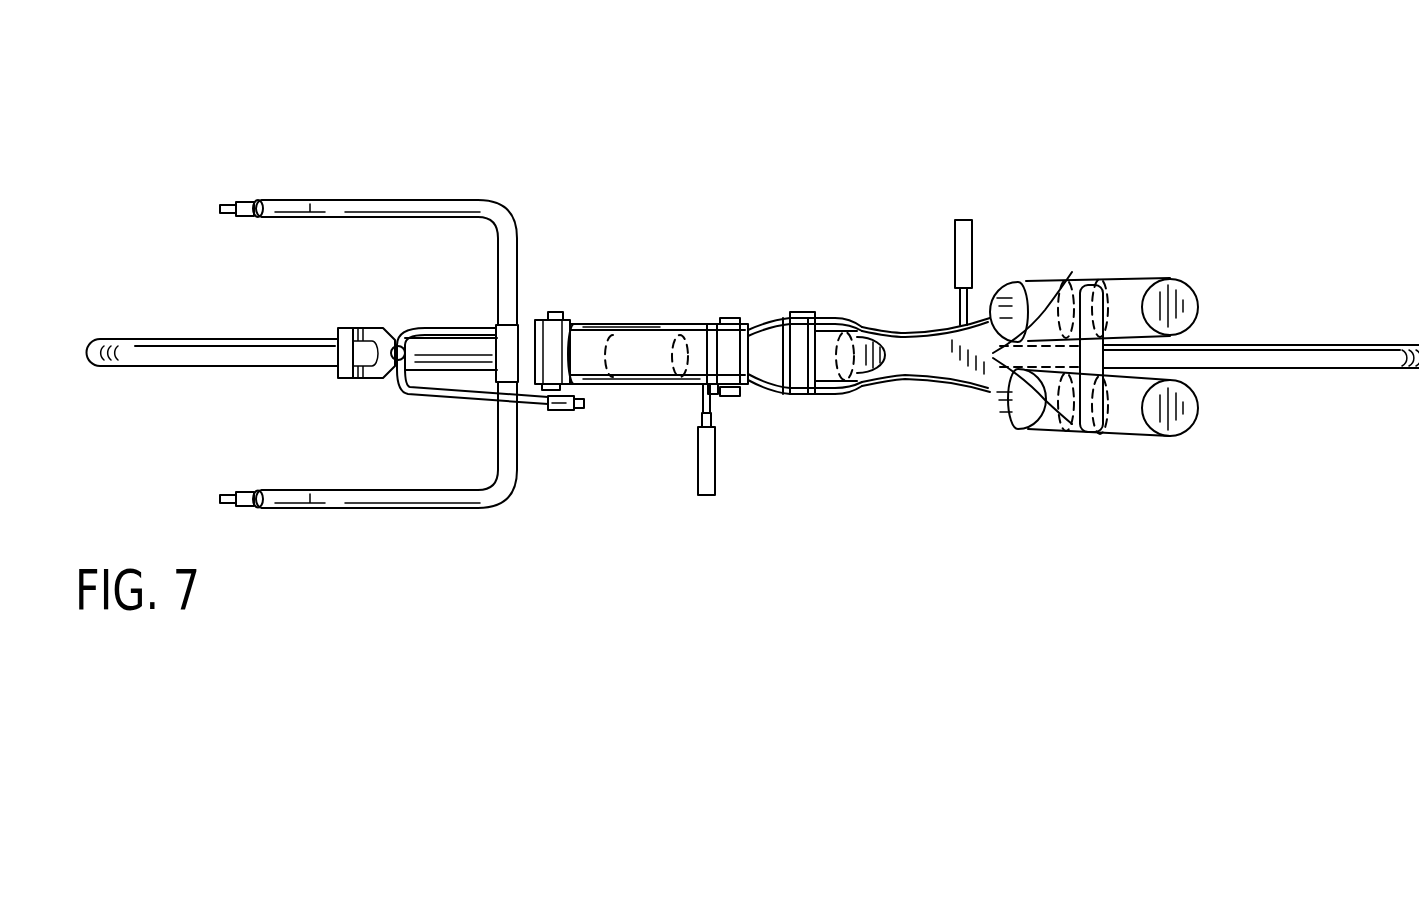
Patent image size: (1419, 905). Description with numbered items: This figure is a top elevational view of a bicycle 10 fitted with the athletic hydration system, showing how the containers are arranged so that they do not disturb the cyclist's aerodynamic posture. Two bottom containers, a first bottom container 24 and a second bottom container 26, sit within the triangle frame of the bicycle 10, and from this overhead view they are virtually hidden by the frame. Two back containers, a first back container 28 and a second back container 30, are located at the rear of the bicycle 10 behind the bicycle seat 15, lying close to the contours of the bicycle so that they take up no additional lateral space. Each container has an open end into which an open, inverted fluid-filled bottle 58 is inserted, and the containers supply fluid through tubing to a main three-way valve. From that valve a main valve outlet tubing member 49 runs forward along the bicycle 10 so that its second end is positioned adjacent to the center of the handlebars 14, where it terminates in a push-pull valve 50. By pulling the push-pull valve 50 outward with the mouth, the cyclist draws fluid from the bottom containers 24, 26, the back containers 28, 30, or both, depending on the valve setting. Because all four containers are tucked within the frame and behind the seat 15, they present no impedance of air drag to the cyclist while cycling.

The bicycle 10 is at (236, 132).
The handlebars 14 is at (361, 200).
The bicycle seat 15 is at (1050, 303).
The first bottom container 24 is at (697, 365).
The second bottom container 26 is at (793, 390).
The first back container 28 is at (1040, 430).
The second back container 30 is at (1022, 293).
The main valve outlet tubing member 49 is at (430, 398).
The push-pull valve 50 is at (560, 412).
The fluid-filled bottle 58 is at (632, 356).